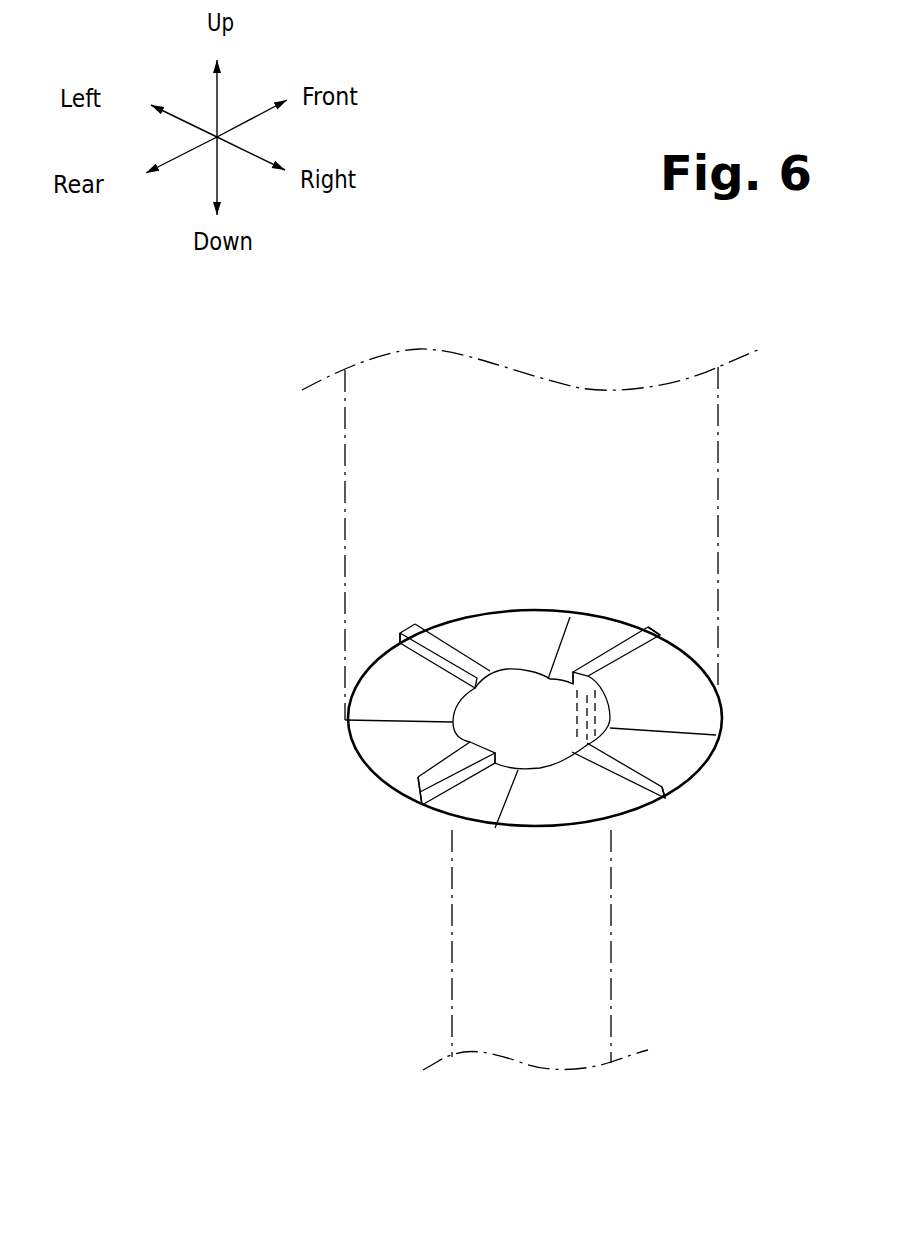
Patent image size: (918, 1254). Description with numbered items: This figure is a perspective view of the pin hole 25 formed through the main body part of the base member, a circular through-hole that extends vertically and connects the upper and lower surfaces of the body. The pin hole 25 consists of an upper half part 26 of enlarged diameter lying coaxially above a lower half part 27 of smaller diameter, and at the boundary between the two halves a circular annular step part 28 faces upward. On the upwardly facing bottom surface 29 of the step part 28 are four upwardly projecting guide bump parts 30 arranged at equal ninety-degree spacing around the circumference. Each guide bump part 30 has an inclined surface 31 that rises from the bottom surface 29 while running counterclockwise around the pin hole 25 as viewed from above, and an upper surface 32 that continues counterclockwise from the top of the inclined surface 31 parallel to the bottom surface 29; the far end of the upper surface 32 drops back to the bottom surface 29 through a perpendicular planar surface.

The pin hole 25 is at (714, 426).
The upper half part 26 is at (717, 492).
The lower half part 27 is at (611, 887).
The step part 28 is at (724, 749).
The bottom surface 29 is at (575, 633).
The guide bump part 30 is at (493, 611).
The inclined surface 31 is at (529, 628).
The upper surface 32 is at (424, 637).